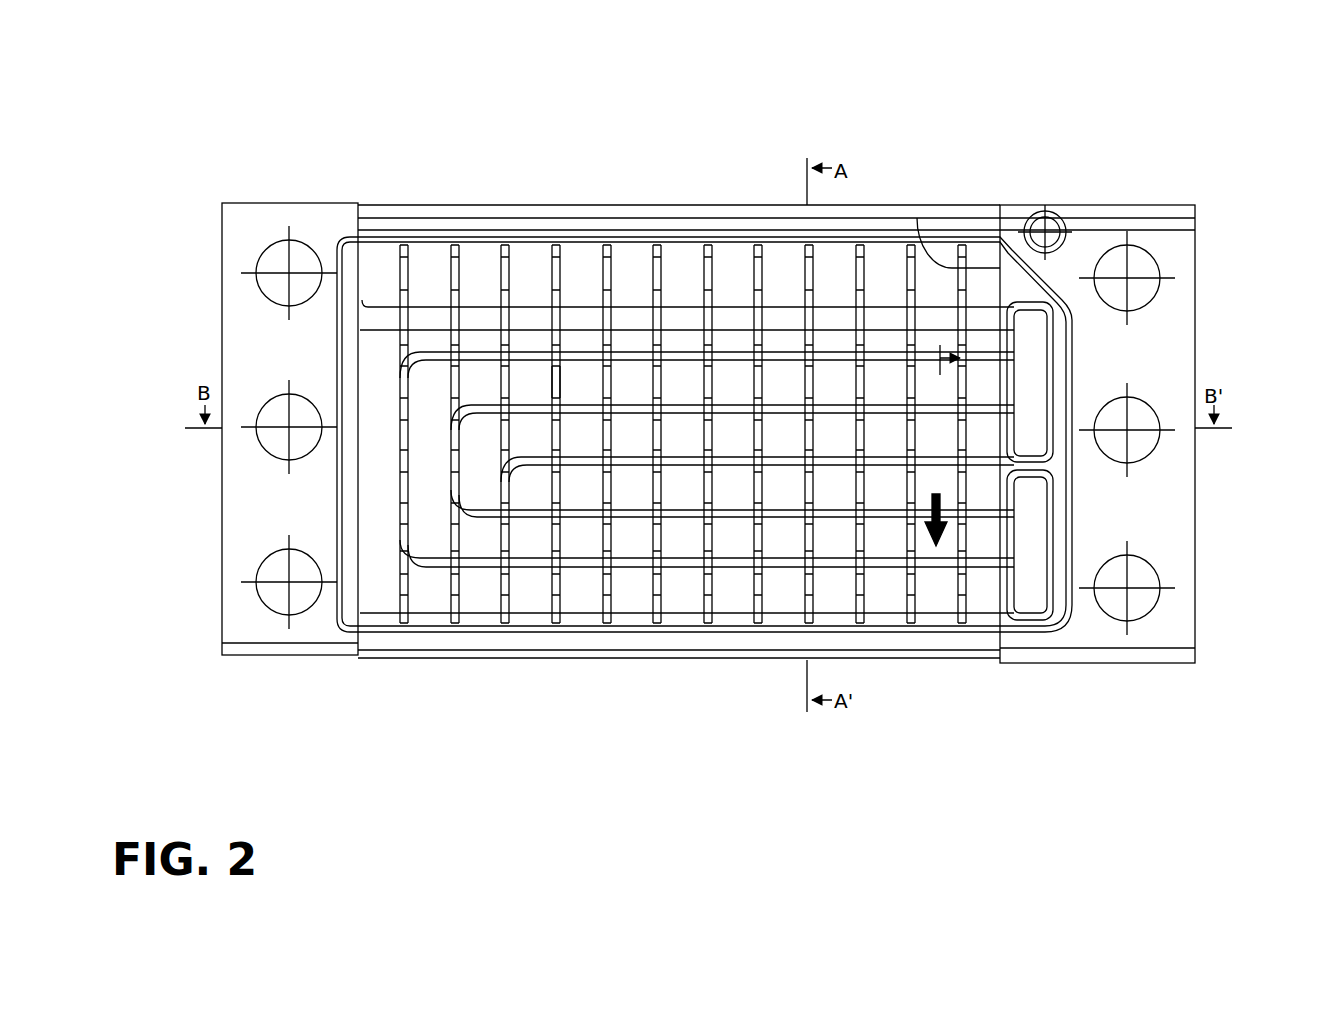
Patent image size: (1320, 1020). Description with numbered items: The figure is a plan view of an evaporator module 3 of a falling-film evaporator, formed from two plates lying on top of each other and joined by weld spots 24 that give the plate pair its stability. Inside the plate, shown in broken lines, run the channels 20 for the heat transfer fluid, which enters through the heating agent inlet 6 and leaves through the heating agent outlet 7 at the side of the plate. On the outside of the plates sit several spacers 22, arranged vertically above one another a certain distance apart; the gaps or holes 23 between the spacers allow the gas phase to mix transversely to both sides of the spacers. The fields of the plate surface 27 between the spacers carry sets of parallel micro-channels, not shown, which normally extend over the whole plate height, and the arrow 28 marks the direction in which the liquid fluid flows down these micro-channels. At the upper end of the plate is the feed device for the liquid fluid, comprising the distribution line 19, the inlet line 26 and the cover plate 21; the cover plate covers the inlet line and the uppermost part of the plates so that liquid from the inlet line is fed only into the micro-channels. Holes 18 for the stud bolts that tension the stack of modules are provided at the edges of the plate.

The evaporator module 3 is at (967, 168).
The heating agent inlet 6 is at (1035, 545).
The heating agent outlet 7 is at (1032, 385).
The hole for stud bolt 18 is at (1138, 265).
The distribution line 19 is at (1047, 230).
The channel for heat transfer fluid 20 is at (740, 568).
The cover plate 21 is at (882, 268).
The spacer 22 is at (556, 290).
The hole 23 is at (557, 383).
The weld spot 24 is at (660, 568).
The inlet line 26 is at (452, 228).
The plate surface 27 is at (942, 590).
The direction of flow 28 is at (940, 508).